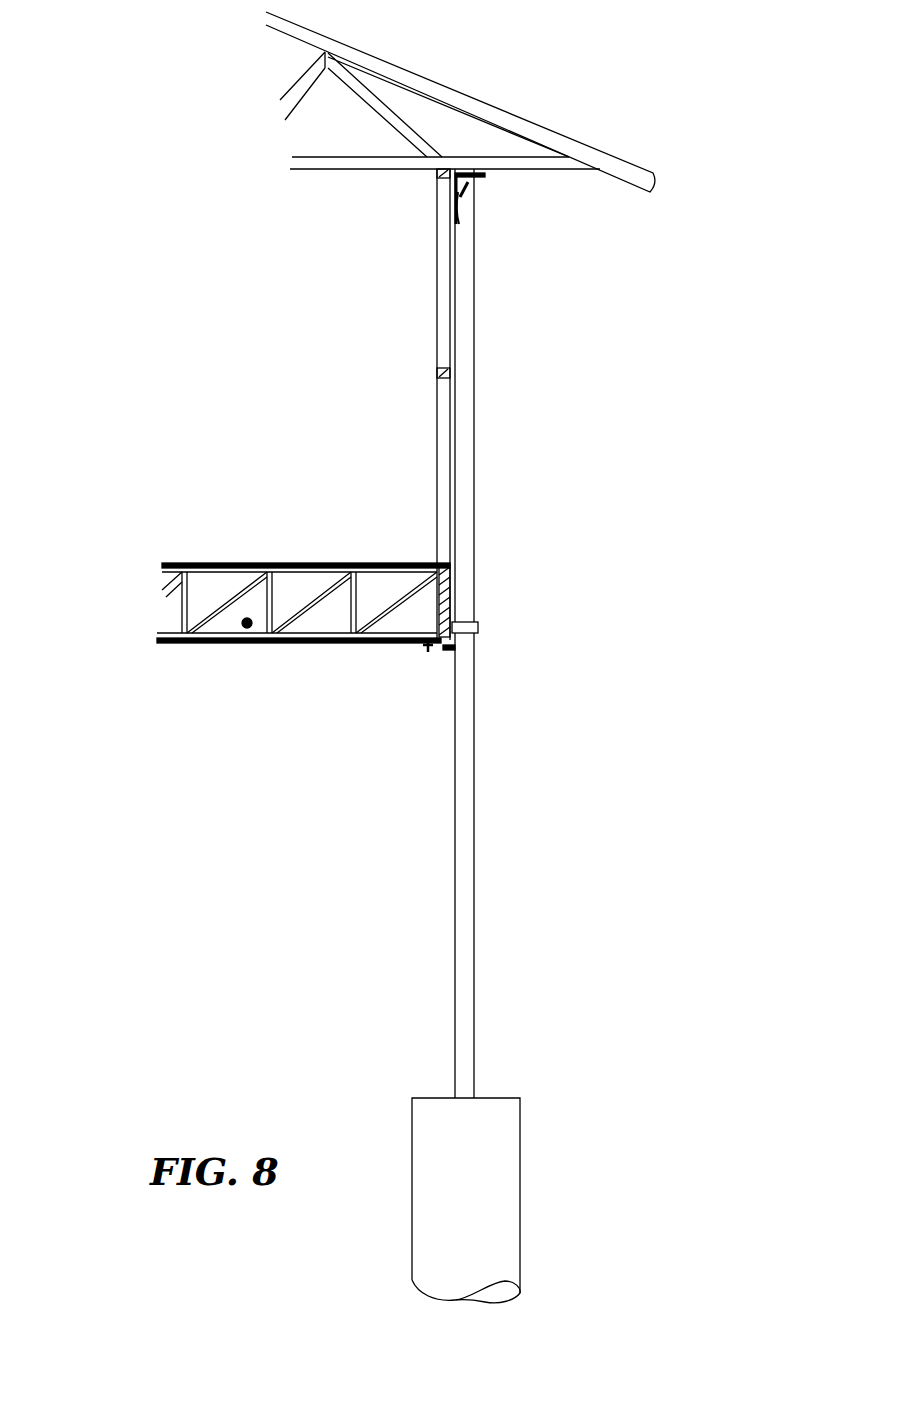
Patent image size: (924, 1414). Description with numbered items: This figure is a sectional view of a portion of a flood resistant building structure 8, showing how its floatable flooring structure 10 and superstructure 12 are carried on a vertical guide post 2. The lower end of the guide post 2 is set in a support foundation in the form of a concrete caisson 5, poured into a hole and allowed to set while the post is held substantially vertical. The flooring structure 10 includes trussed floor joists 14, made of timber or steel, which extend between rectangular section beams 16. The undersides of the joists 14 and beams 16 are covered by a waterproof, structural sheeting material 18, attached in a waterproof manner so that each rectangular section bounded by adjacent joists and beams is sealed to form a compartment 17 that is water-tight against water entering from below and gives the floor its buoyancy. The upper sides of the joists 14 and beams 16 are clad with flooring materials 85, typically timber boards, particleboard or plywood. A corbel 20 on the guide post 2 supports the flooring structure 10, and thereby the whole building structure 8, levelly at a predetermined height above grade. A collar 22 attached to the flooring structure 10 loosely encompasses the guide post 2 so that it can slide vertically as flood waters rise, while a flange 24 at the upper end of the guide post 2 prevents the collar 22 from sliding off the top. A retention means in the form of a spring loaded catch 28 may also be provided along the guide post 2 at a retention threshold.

The guide post 2 is at (455, 773).
The concrete caisson 5 is at (433, 1158).
The building structure 8 is at (187, 438).
The flooring structure 10 is at (241, 589).
The superstructure 12 is at (387, 170).
The trussed floor joist 14 is at (183, 608).
The rectangular section beam 16 is at (450, 592).
The compartment 17 is at (242, 623).
The sheeting material 18 is at (200, 640).
The corbel 20 is at (453, 660).
The collar 22 is at (478, 628).
The flange 24 is at (488, 180).
The spring loaded catch 28 is at (460, 228).
The flooring material 85 is at (237, 562).